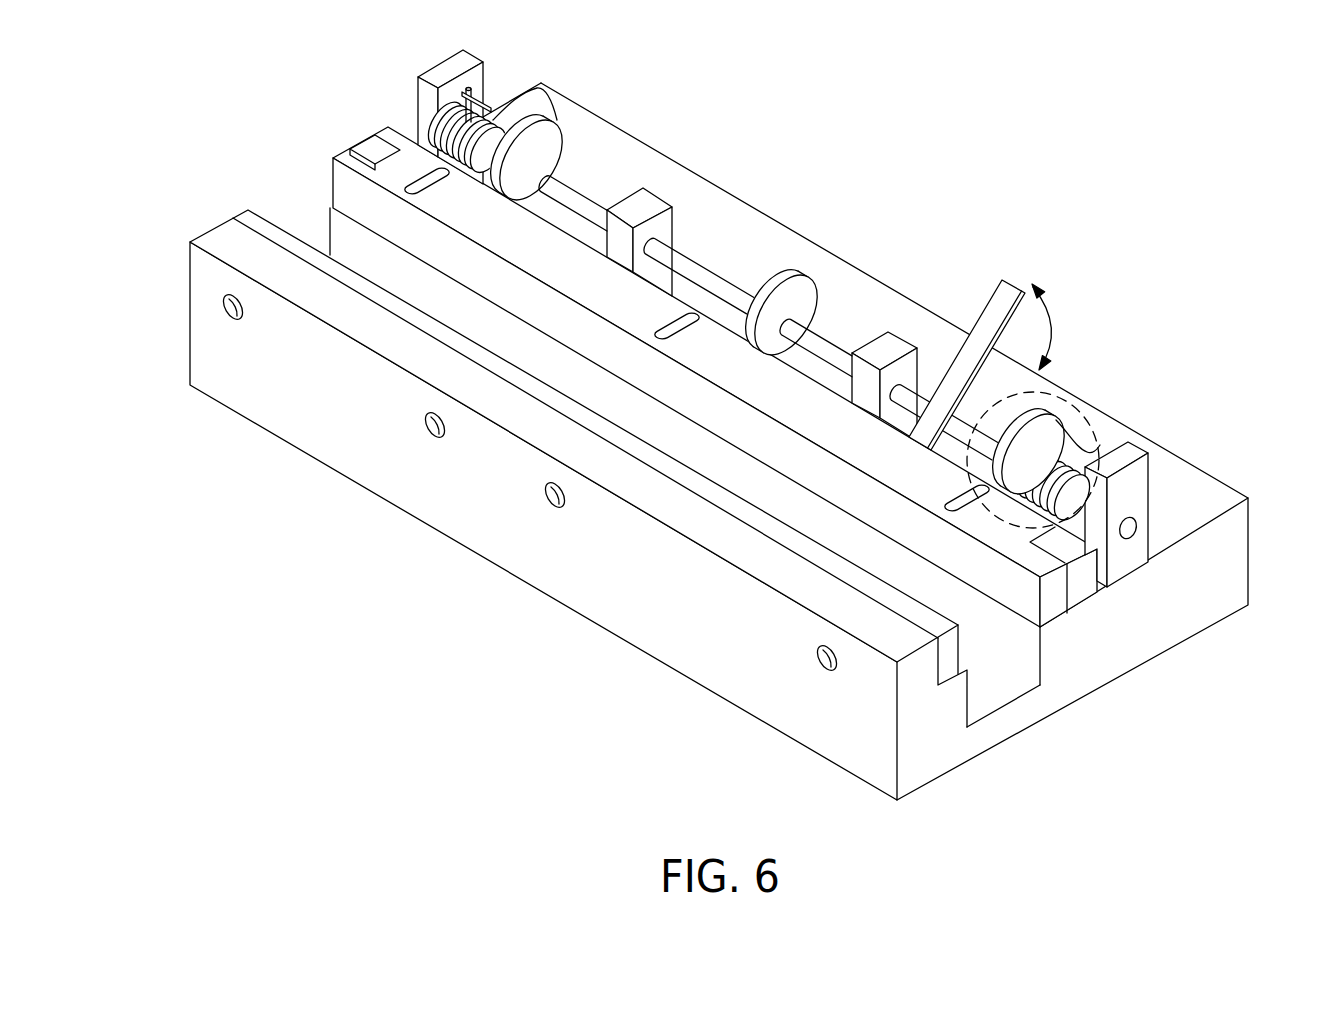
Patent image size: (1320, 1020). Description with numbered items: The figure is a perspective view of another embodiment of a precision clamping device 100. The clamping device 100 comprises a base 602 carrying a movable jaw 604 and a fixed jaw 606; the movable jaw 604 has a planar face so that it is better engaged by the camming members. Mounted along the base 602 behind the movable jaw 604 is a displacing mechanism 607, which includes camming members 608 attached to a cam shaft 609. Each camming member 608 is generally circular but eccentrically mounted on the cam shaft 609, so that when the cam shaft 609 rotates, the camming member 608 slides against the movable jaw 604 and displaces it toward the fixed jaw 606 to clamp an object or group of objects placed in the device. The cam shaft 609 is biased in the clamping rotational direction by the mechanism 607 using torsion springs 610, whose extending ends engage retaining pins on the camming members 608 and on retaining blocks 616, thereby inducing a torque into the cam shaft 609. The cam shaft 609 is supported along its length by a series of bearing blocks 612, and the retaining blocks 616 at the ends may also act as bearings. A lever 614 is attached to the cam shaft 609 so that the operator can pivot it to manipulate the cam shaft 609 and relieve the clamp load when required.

The clamping device 100 is at (955, 140).
The base 602 is at (1187, 478).
The movable jaw 604 is at (346, 150).
The fixed jaw 606 is at (248, 210).
The displacing mechanism 607 is at (504, 77).
The camming member 608 is at (545, 118).
The cam shaft 609 is at (820, 333).
The torsion spring 610 is at (520, 93).
The bearing block 612 is at (656, 200).
The lever 614 is at (1015, 282).
The retaining block 616 is at (440, 63).